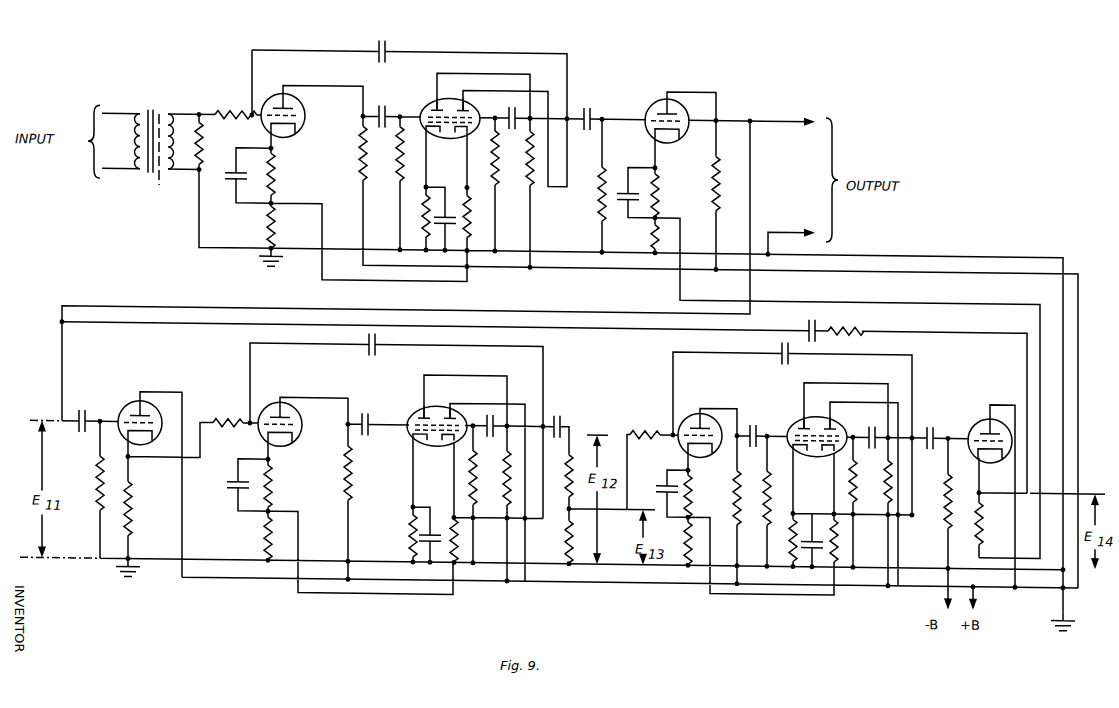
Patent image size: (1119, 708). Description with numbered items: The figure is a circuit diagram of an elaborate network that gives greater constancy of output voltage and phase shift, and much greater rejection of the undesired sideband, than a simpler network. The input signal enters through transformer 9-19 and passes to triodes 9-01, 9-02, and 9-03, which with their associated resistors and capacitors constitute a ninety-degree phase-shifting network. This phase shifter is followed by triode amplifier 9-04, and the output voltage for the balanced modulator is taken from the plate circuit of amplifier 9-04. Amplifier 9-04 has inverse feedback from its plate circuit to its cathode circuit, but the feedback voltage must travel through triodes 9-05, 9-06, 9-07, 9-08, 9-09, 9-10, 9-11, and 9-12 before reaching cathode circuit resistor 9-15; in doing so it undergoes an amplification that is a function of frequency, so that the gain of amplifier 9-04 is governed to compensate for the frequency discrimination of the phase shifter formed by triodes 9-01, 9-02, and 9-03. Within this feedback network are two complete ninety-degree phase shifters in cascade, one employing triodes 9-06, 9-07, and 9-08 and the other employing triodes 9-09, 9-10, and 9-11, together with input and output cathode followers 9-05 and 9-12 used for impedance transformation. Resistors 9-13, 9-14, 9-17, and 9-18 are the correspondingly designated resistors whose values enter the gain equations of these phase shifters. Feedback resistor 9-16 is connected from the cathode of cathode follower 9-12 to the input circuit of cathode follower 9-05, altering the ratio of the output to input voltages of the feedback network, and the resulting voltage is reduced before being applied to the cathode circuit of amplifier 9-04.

The triode 9-01 is at (305, 116).
The triode 9-02 is at (430, 101).
The triode 9-03 is at (480, 112).
The triode amplifier 9-04 is at (651, 104).
The input cathode follower 9-05 is at (133, 406).
The triode 9-06 is at (298, 416).
The triode 9-07 is at (420, 410).
The triode 9-08 is at (461, 422).
The triode 9-09 is at (696, 404).
The triode 9-10 is at (805, 412).
The triode 9-11 is at (842, 417).
The output cathode follower 9-12 is at (975, 417).
The resistor 9-13 is at (566, 537).
The resistor 9-14 is at (982, 509).
The cathode circuit resistor 9-15 is at (651, 226).
The feedback resistor 9-16 is at (852, 321).
The resistor 9-17 is at (567, 460).
The resistor 9-18 is at (97, 472).
The transformer 9-19 is at (153, 140).